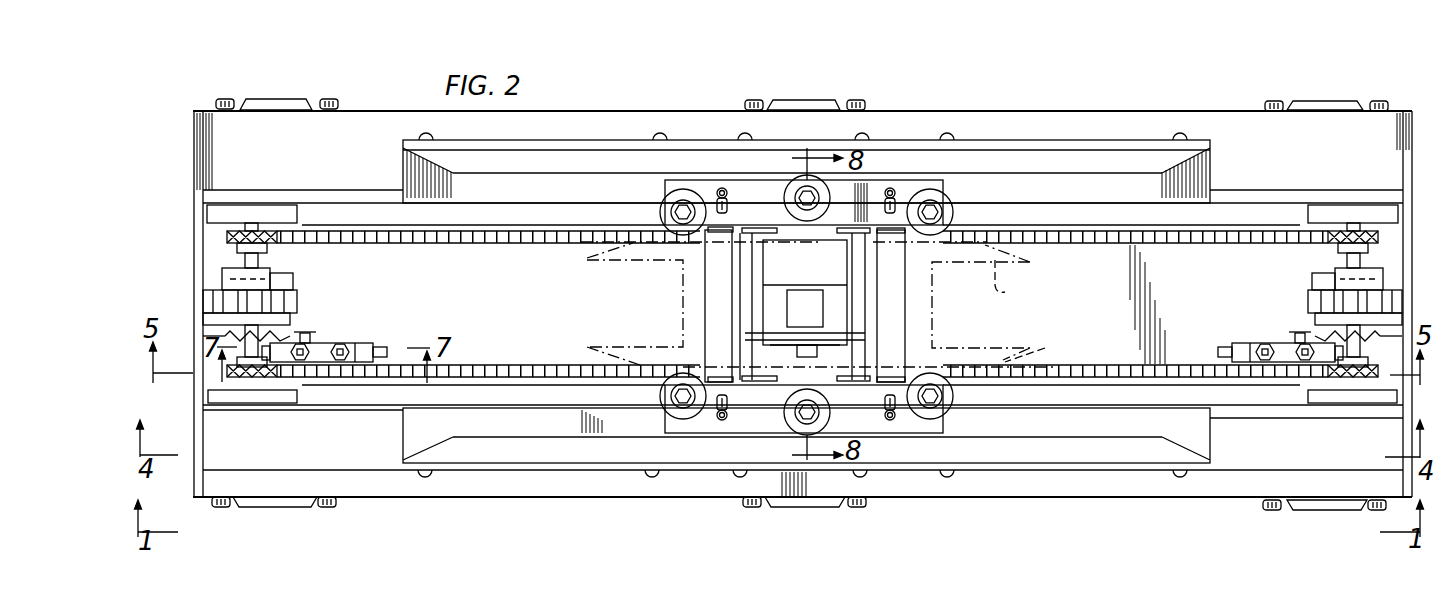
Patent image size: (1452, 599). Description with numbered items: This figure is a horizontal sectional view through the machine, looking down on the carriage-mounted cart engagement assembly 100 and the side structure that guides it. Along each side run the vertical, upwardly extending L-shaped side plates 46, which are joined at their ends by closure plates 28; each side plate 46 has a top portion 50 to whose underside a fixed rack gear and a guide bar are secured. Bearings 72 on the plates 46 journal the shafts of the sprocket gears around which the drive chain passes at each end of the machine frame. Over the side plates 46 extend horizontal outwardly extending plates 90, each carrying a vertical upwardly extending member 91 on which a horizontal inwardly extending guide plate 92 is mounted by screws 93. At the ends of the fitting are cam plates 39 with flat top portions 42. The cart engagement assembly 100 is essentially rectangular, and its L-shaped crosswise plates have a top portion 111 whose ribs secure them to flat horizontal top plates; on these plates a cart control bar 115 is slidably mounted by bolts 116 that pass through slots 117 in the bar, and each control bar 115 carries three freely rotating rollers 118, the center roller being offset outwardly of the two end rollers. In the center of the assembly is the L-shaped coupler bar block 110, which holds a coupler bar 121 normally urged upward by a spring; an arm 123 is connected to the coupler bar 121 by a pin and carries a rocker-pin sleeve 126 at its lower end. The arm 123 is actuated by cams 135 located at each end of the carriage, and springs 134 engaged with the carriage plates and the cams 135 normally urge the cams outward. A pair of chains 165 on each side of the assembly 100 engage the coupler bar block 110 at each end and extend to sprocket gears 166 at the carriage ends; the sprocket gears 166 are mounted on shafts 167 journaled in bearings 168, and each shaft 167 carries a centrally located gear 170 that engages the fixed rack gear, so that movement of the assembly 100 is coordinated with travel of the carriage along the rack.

The closure plate 28 is at (193, 233).
The cam plate 39 is at (1043, 351).
The flat top portion 42 is at (1020, 284).
The L-shaped side plate 46 is at (1072, 130).
The top portion 50 is at (370, 473).
The bearing 72 is at (263, 99).
The horizontal outwardly extending plate 90 is at (1200, 180).
The vertical upwardly extending member 91 is at (1212, 150).
The guide plate 92 is at (525, 168).
The screw 93 is at (424, 138).
The cart engagement assembly 100 is at (822, 273).
The coupler bar block 110 is at (770, 305).
The top portion 111 is at (712, 268).
The cart control bar 115 is at (870, 190).
The bolt 116 is at (721, 421).
The slot 117 is at (727, 400).
The roller 118 is at (706, 390).
The coupler bar 121 is at (813, 298).
The arm 123 is at (840, 340).
The rocker-pin sleeve 126 is at (770, 345).
The spring 134 is at (288, 342).
The cam 135 is at (397, 339).
The chain 165 is at (1170, 240).
The sprocket gear 166 is at (278, 238).
The shaft 167 is at (262, 258).
The bearing 168 is at (215, 220).
The gear 170 is at (293, 303).